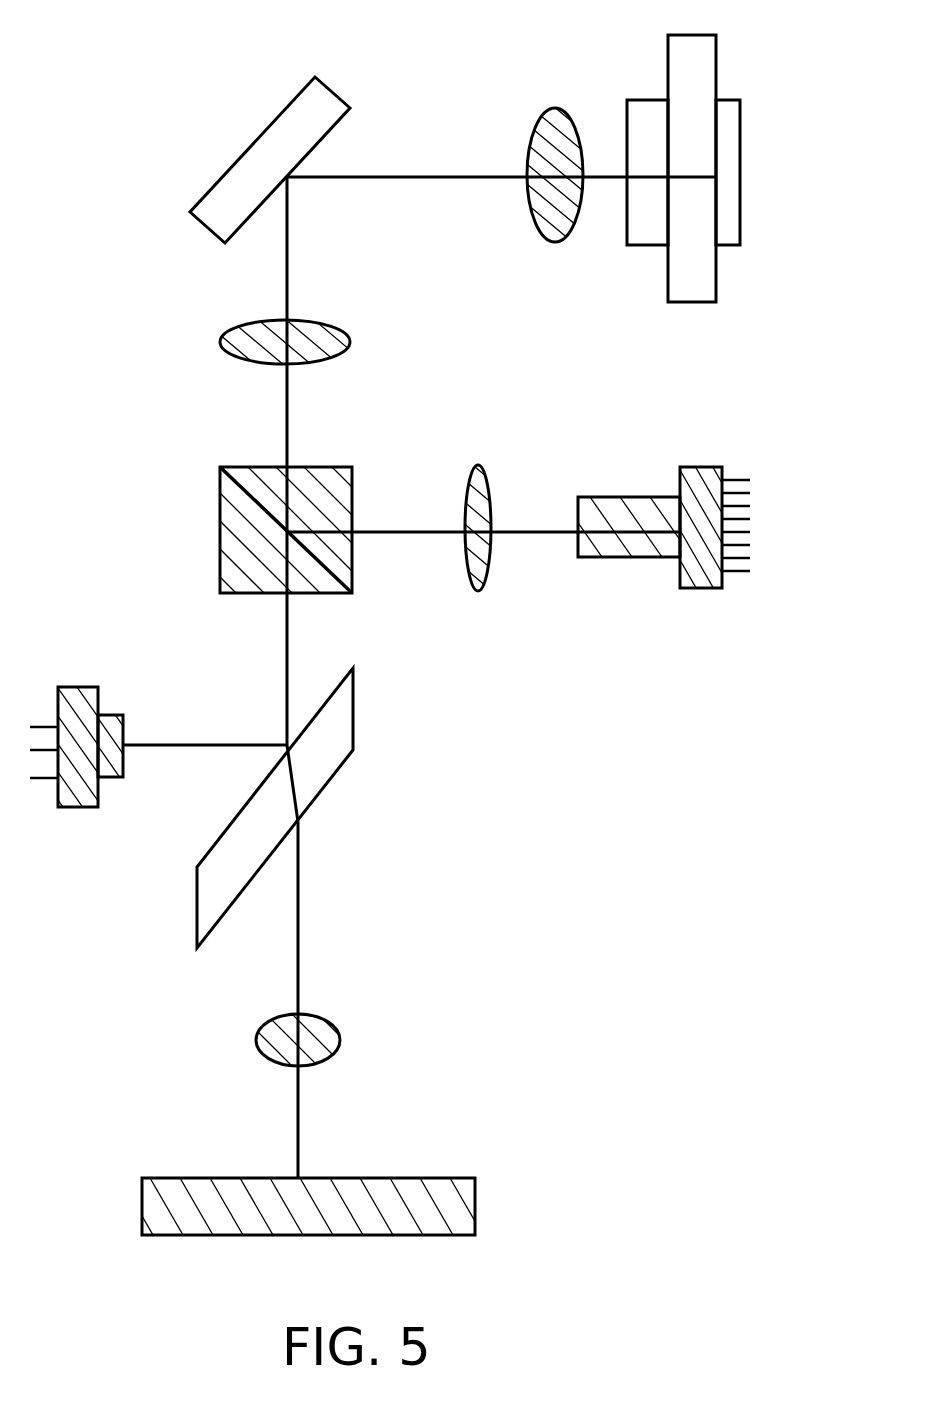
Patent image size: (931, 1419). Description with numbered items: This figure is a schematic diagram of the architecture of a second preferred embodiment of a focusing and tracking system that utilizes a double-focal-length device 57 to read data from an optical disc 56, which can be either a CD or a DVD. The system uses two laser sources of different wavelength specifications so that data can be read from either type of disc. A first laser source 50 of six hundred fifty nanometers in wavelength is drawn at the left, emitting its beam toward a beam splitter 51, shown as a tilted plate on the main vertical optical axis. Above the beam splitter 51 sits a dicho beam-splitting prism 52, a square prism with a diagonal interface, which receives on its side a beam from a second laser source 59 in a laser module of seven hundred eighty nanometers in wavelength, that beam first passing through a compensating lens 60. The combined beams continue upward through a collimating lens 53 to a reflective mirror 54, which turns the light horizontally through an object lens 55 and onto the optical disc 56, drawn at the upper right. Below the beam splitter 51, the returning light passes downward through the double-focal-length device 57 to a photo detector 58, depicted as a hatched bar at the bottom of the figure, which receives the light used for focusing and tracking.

The first laser source 50 is at (83, 747).
The beam splitter 51 is at (330, 733).
The dicho beam-splitting prism 52 is at (253, 532).
The collimating lens 53 is at (320, 338).
The reflective mirror 54 is at (285, 143).
The object lens 55 is at (553, 138).
The optical disc 56 is at (652, 133).
The double-focal-length device 57 is at (315, 1033).
The photo detector 58 is at (437, 1203).
The second laser source 59 is at (700, 487).
The compensating lens 60 is at (478, 507).